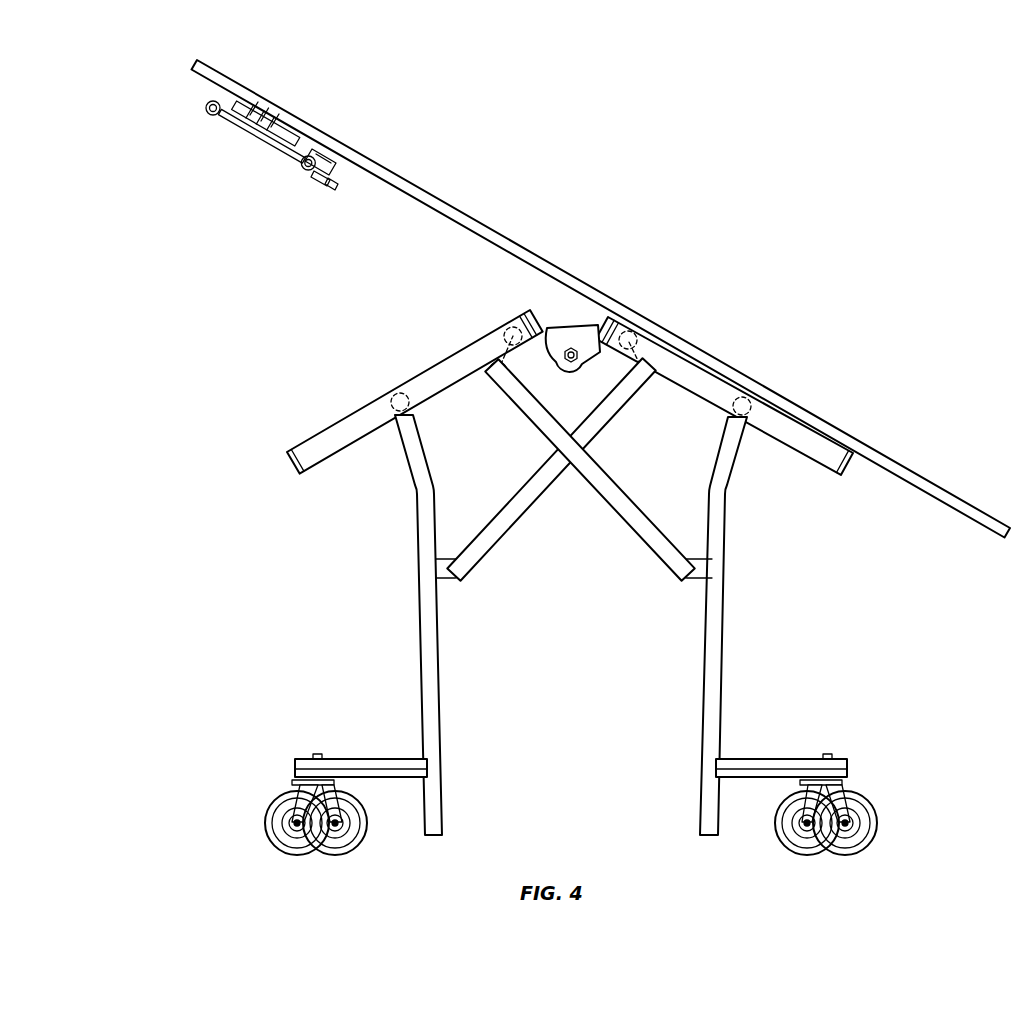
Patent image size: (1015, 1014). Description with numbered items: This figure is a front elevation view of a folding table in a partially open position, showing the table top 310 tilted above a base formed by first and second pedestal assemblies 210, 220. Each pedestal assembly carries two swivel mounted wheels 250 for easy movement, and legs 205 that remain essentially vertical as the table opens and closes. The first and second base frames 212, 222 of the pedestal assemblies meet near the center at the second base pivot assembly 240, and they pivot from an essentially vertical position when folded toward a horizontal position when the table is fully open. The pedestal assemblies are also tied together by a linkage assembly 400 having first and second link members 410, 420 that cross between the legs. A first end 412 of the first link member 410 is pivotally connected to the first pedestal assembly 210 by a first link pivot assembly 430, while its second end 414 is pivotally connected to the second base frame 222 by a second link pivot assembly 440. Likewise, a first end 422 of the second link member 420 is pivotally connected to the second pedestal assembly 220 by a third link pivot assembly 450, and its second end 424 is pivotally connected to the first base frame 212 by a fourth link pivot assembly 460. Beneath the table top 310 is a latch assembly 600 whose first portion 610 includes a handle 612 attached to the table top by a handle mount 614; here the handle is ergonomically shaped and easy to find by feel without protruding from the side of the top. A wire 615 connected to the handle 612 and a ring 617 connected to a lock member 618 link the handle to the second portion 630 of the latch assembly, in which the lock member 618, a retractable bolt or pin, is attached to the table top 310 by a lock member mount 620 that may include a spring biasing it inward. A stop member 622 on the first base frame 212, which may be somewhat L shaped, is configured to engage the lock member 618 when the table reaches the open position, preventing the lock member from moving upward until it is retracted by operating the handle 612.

The table top 310 is at (452, 202).
The second base pivot assembly 240 is at (573, 350).
The first base frame 212 is at (379, 395).
The second base frame 222 is at (817, 452).
The stop member 622 is at (288, 462).
The legs 205 is at (568, 625).
The first pedestal assembly 210 is at (418, 706).
The second pedestal assembly 220 is at (726, 712).
The swivel mounted wheels 250 is at (267, 813).
The linkage assembly 400 is at (574, 495).
The first link member 410 is at (505, 483).
The first end of the first link member 412 is at (473, 563).
The second end of the first link member 414 is at (630, 383).
The second link member 420 is at (639, 469).
The first end of the second link member 422 is at (667, 532).
The second end of the second link member 424 is at (515, 382).
The first link pivot assembly 430 is at (461, 574).
The second link pivot assembly 440 is at (650, 378).
The third link pivot assembly 450 is at (681, 574).
The fourth link pivot assembly 460 is at (496, 378).
The latch assembly 600 is at (267, 142).
The first portion of the latch assembly 610 is at (257, 107).
The handle 612 is at (206, 106).
The handle mount 614 is at (232, 102).
The wire 615 is at (273, 152).
The ring 617 is at (308, 154).
The lock member 618 is at (334, 180).
The lock member mount 620 is at (320, 180).
The second portion of the latch assembly 630 is at (322, 152).